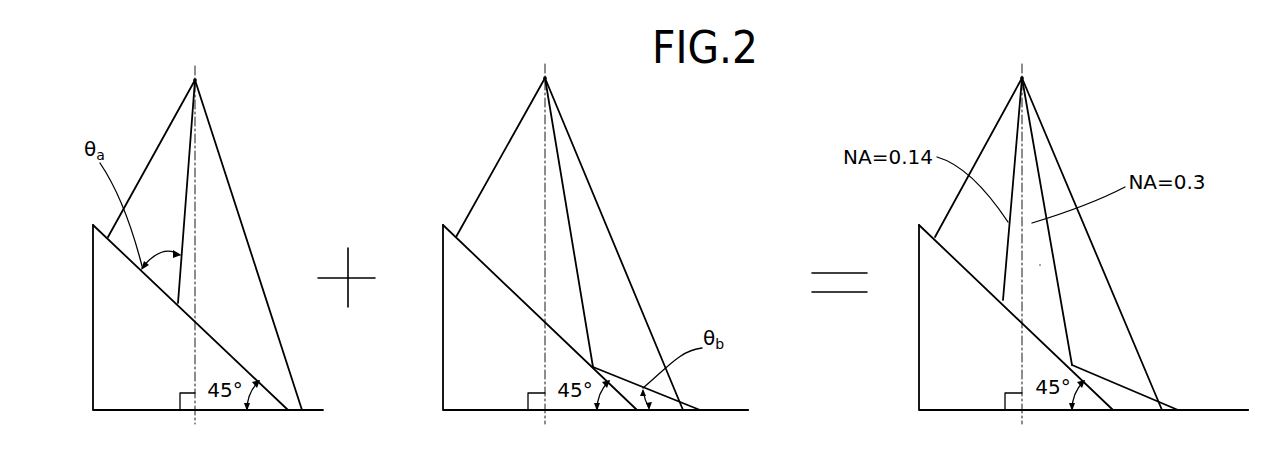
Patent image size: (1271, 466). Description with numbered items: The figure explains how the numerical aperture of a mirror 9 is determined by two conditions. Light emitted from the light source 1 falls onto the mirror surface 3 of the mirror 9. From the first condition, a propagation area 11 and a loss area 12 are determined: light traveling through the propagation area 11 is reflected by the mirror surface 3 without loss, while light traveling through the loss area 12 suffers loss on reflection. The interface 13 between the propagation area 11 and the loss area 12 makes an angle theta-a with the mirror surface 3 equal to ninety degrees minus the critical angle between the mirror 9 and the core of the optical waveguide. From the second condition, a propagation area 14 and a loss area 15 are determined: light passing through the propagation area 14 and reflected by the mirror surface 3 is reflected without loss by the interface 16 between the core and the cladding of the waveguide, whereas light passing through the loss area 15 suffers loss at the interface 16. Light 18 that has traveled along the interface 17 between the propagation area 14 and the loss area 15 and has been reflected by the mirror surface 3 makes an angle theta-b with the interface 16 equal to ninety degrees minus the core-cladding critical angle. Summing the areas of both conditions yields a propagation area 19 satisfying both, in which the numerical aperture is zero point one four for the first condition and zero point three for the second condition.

The light source 1 is at (1022, 78).
The mirror surface 3 is at (944, 240).
The mirror 9 is at (930, 328).
The propagation area 11 is at (212, 148).
The loss area 12 is at (1000, 146).
The interface 13 is at (183, 205).
The propagation area 14 is at (528, 146).
The loss area 15 is at (1045, 148).
The interface between core and cladding 16 is at (1207, 409).
The interface 17 is at (570, 210).
The light 18 is at (623, 373).
The propagation area 19 is at (1040, 265).